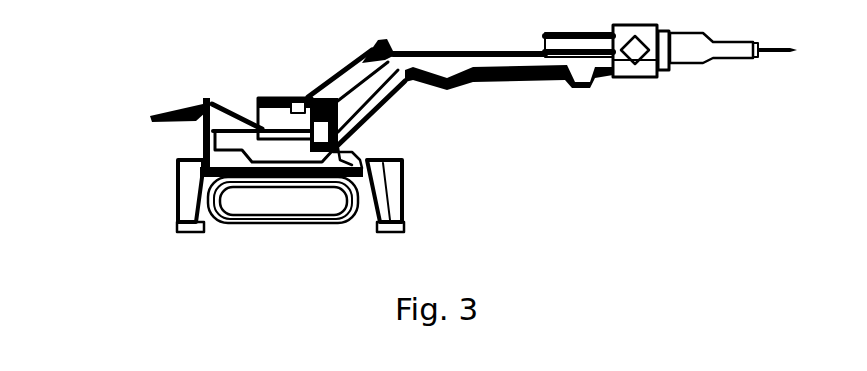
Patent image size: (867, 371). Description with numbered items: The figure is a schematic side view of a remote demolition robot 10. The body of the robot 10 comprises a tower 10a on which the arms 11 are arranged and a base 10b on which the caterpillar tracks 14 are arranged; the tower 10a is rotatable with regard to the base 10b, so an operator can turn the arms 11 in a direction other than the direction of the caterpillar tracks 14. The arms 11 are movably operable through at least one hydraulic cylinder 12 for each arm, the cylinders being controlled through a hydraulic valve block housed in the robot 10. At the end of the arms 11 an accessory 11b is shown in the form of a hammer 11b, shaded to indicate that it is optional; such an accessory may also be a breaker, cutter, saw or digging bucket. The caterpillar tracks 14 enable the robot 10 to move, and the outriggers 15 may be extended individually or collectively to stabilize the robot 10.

The remote demolition robot 10 is at (172, 74).
The tower 10a is at (267, 100).
The base 10b is at (197, 145).
The arms 11 is at (447, 58).
The accessory 11b is at (708, 60).
The cylinder 12 is at (367, 58).
The caterpillar tracks 14 is at (253, 212).
The outriggers 15 is at (178, 187).